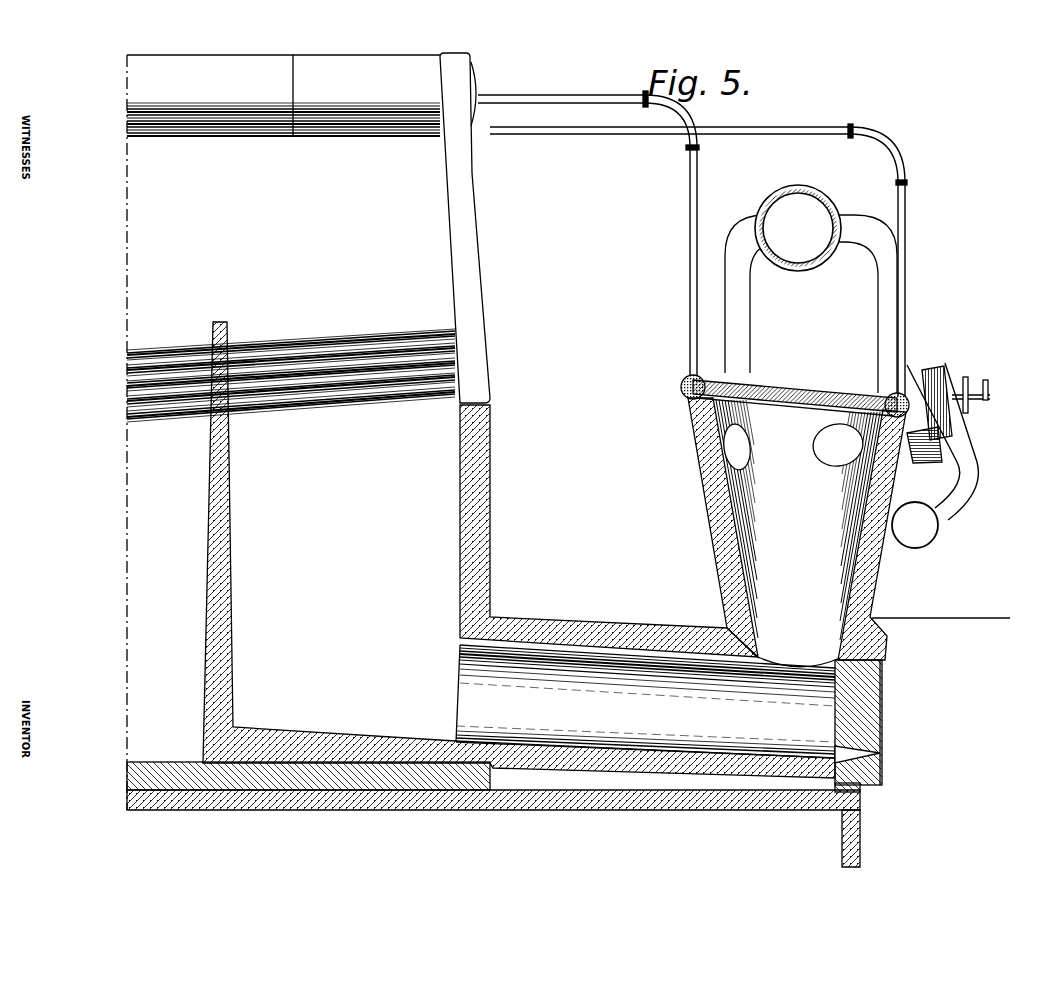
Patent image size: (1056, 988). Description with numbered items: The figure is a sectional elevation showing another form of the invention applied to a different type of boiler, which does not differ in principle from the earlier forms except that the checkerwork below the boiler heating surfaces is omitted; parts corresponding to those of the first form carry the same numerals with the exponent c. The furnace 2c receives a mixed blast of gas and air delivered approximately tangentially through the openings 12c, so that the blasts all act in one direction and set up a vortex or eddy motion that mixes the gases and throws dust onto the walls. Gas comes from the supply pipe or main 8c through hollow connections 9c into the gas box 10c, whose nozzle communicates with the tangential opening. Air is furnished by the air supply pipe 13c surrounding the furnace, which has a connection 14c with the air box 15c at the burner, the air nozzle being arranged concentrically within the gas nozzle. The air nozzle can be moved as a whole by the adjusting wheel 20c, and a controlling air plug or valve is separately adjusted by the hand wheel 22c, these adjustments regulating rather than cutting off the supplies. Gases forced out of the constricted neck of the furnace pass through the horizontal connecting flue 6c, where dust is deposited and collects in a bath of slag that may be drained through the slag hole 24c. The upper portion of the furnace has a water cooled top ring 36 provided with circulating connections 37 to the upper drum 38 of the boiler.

The furnace 2c is at (870, 580).
The flue 6c is at (645, 701).
The supply pipe or main 8c is at (804, 262).
The hollow connections 9c is at (745, 323).
The gas box 10c is at (940, 440).
The openings 12c is at (830, 455).
The air supply pipe 13c is at (928, 528).
The connection 14c is at (967, 480).
The air box 15c is at (935, 363).
The adjusting wheel 20c is at (968, 375).
The hand wheel 22c is at (990, 395).
The slag hole 24c is at (885, 752).
The water cooled top ring 36 is at (680, 388).
The circulating connections 37 is at (688, 266).
The upper drum 38 is at (387, 128).